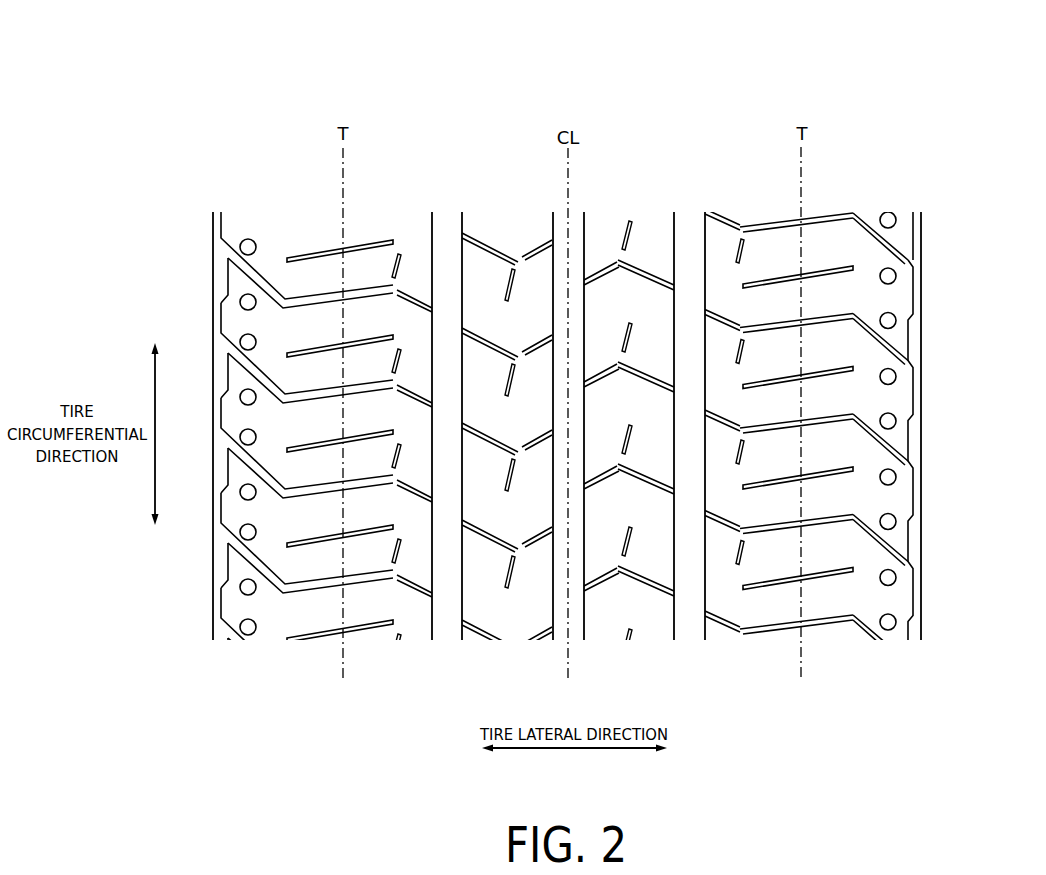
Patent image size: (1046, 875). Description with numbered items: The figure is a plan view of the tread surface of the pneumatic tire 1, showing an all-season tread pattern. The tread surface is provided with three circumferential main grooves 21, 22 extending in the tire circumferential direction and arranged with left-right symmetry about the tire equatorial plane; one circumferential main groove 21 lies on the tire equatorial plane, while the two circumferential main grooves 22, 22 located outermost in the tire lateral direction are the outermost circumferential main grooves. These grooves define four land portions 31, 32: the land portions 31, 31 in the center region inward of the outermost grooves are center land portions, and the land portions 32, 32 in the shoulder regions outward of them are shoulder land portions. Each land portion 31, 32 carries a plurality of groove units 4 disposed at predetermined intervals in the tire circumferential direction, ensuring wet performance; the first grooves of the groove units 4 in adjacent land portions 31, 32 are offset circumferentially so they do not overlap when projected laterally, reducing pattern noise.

The pneumatic tire 1 is at (887, 98).
The groove unit 4 is at (405, 364).
The circumferential main groove 21 is at (578, 232).
The circumferential main groove 22 is at (447, 230).
The land portion 31 is at (524, 226).
The land portion 32 is at (304, 226).